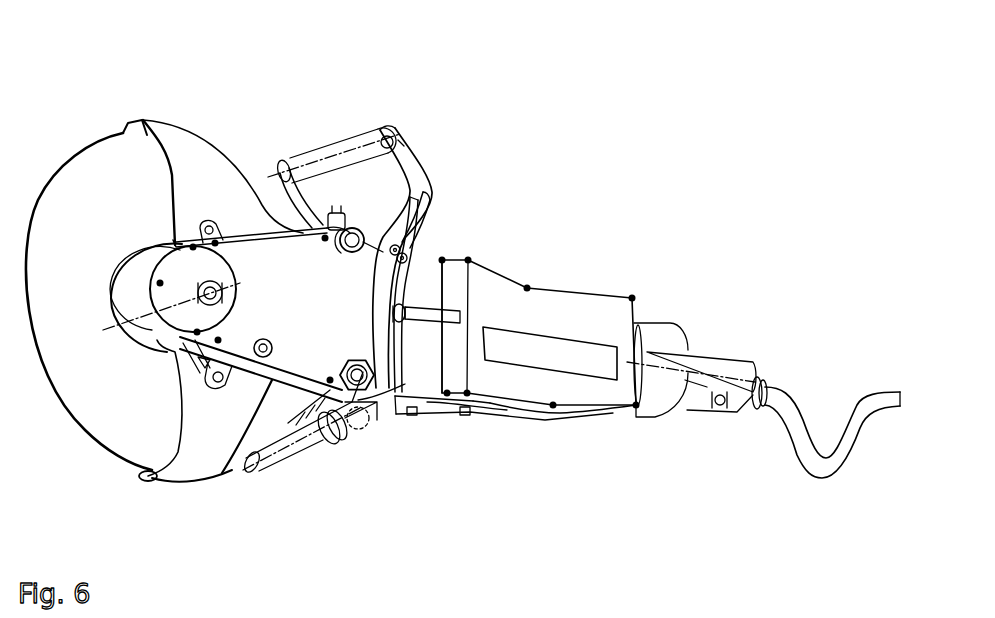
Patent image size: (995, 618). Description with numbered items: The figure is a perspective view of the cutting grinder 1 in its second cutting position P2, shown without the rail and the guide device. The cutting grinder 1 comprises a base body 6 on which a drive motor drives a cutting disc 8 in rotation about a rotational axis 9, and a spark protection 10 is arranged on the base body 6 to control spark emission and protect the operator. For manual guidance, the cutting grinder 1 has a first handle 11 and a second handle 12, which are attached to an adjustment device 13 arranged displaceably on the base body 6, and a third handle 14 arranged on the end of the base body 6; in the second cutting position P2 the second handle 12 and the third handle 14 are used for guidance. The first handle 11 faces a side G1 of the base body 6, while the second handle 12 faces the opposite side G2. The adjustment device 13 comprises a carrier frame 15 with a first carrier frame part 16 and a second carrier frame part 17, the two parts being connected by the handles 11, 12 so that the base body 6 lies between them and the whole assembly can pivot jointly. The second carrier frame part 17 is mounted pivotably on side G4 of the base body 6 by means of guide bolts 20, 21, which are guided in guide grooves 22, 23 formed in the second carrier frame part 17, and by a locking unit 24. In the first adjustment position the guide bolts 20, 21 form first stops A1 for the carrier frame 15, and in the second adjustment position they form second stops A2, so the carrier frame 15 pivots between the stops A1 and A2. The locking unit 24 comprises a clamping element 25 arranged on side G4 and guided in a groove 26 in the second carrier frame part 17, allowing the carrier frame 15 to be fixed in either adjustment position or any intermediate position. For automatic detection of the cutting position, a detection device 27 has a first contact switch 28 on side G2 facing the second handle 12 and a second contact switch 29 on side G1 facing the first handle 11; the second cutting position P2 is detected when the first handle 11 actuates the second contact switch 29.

The cutting grinder 1 is at (548, 58).
The base body 6 is at (580, 422).
The cutting disc 8 is at (95, 152).
The rotational axis 9 is at (152, 303).
The spark protection 10 is at (185, 466).
The first handle 11 is at (287, 453).
The second handle 12 is at (317, 153).
The adjustment device 13 is at (419, 136).
The third handle 14 is at (652, 393).
The carrier frame 15 is at (402, 129).
The first carrier frame part 16 is at (283, 168).
The second carrier frame part 17 is at (382, 130).
The guide bolt 20 is at (420, 410).
The guide bolt 21 is at (405, 245).
The guide groove 22 is at (447, 407).
The guide groove 23 is at (410, 228).
The locking unit 24 is at (527, 288).
The clamping element 25 is at (456, 306).
The groove 26 is at (430, 310).
The detection device 27 is at (340, 378).
The first contact switch 28 is at (332, 217).
The second contact switch 29 is at (340, 440).
The first stops A1 is at (420, 195).
The second stops A2 is at (403, 280).
The side of the base body G1 is at (260, 380).
The side of the base body G2 is at (270, 215).
The side of the base body G4 is at (226, 323).
The second cutting position P2 is at (223, 176).